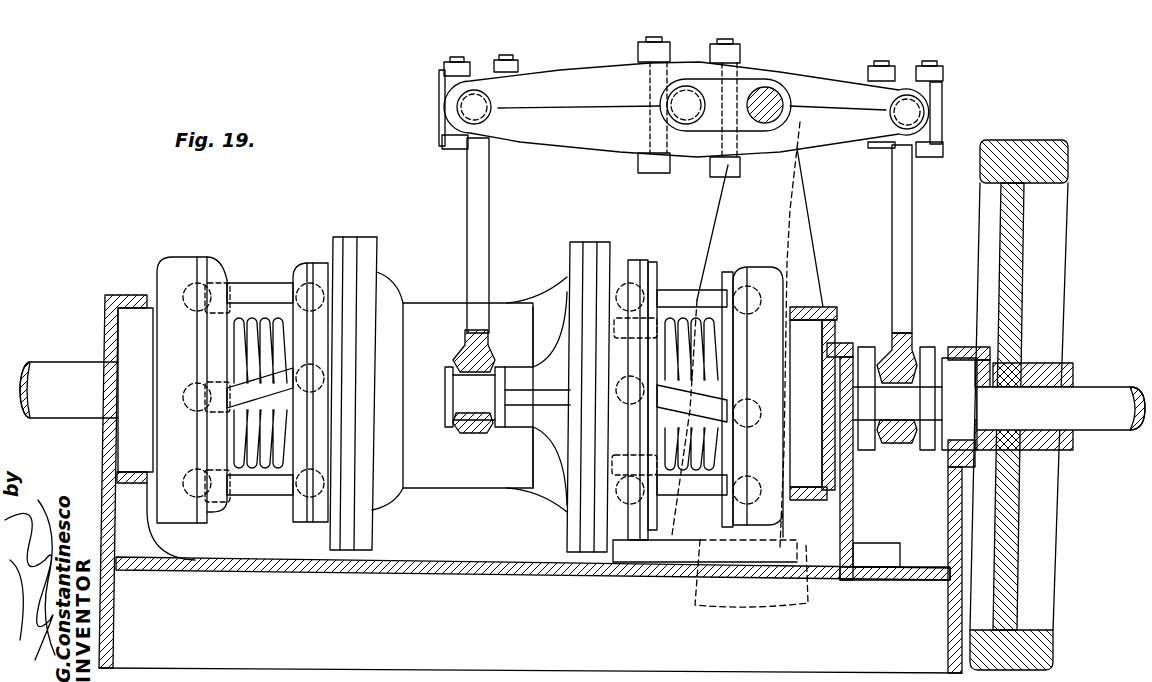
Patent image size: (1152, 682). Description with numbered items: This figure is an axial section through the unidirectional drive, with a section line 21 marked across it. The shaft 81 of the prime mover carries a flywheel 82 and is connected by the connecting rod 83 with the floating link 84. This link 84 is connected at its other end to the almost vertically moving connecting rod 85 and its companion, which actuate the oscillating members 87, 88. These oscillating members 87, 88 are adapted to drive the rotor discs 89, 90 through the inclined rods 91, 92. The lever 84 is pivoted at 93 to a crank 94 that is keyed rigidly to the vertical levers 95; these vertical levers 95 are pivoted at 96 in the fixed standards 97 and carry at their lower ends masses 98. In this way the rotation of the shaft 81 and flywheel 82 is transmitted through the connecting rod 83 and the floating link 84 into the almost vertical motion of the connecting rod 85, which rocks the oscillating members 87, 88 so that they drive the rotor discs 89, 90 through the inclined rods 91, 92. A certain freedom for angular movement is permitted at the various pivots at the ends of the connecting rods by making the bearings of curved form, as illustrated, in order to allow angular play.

The section line 21 is at (407, 300).
The shaft 81 is at (1083, 407).
The flywheel 82 is at (1012, 247).
The connecting rod 83 is at (898, 255).
The floating link 84 is at (830, 100).
The connecting rod 85 is at (478, 210).
The oscillating member 87 is at (555, 373).
The oscillating member 88 is at (363, 250).
The rotor disc 89 is at (768, 295).
The rotor disc 90 is at (174, 280).
The inclined rod 91 is at (683, 303).
The inclined rod 92 is at (257, 282).
The pivot 93 is at (689, 104).
The crank 94 is at (705, 88).
The vertical lever 95 is at (790, 255).
The pivot 96 is at (762, 105).
The fixed standard 97 is at (790, 221).
The mass 98 is at (780, 585).